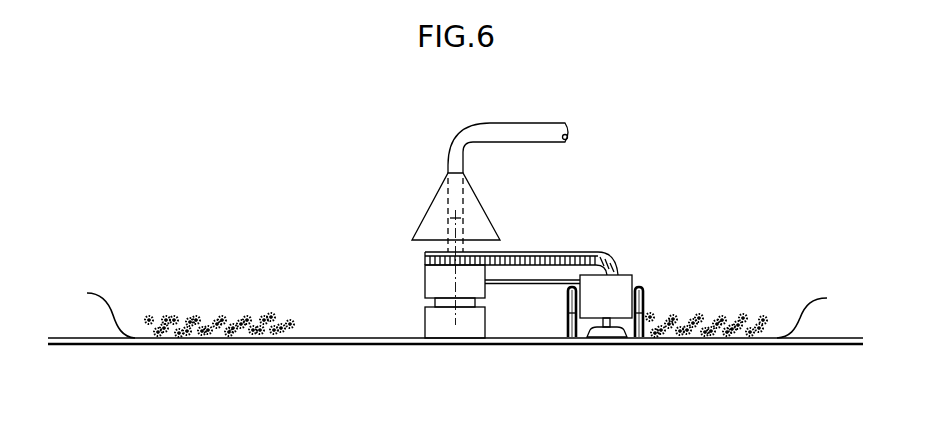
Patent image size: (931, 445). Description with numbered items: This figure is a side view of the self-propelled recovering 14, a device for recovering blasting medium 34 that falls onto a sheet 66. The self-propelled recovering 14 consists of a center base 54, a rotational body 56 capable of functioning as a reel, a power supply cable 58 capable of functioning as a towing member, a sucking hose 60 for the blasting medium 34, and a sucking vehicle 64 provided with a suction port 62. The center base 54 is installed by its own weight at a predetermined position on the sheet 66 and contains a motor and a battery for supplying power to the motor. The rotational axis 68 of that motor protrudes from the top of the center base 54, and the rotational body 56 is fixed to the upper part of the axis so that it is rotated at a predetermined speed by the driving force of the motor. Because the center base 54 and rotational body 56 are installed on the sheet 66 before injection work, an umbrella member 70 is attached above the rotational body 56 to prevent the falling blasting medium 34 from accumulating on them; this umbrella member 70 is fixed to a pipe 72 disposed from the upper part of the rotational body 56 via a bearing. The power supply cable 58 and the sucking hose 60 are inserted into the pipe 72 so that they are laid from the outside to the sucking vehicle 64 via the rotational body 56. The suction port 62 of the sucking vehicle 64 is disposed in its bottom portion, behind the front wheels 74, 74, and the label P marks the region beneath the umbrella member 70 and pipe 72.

The self-propelled recovering 14 is at (622, 222).
The blasting medium 34 is at (207, 318).
The center base 54 is at (463, 327).
The rotational body 56 is at (425, 281).
The power supply cable 58 is at (522, 284).
The sucking hose 60 is at (538, 253).
The suction port 62 is at (605, 337).
The sucking vehicle 64 is at (623, 272).
The sheet 66 is at (773, 335).
The rotational axis 68 is at (440, 290).
The umbrella member 70 is at (428, 202).
The pipe 72 is at (518, 123).
The front wheels 74 is at (645, 305).
The sprayed material P is at (463, 217).